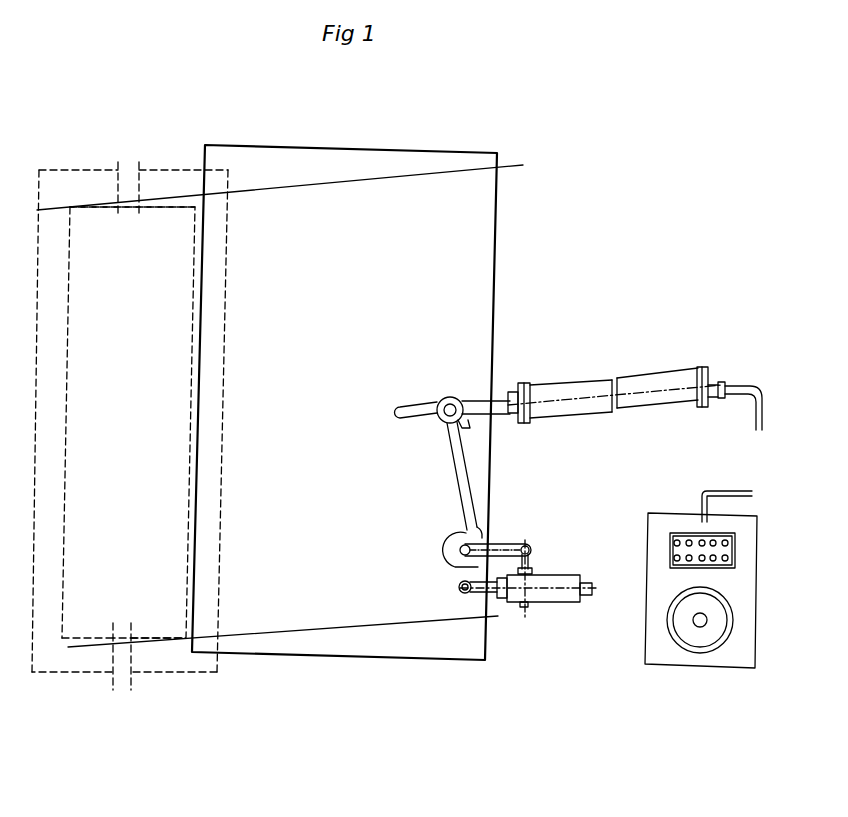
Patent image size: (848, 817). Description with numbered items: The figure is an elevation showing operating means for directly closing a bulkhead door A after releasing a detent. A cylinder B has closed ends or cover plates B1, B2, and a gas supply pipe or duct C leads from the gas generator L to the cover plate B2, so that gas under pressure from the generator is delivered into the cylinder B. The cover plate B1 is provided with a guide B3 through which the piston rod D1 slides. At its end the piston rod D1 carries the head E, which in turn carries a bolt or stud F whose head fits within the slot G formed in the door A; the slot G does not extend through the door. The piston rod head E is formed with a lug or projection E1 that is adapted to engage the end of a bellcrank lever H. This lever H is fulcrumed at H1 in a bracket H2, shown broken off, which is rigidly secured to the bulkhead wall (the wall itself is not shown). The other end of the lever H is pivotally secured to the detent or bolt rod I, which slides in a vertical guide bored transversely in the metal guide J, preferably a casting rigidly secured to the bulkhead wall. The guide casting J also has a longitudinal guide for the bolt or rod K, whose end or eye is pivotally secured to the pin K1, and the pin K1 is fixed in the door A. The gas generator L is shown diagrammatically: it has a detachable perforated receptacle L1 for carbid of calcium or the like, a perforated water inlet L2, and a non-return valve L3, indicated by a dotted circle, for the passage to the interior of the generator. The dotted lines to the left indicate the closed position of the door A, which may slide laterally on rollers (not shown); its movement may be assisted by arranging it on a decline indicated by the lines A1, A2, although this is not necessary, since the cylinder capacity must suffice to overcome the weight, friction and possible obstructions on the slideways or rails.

The bulkhead door A is at (485, 218).
The decline line A1 is at (225, 640).
The decline line A2 is at (212, 195).
The cylinder B is at (643, 385).
The cover plate B1 is at (520, 383).
The cover plate B2 is at (708, 368).
The guide B3 is at (513, 418).
The gas supply pipe C is at (756, 412).
The piston rod D1 is at (481, 400).
The head E is at (446, 397).
The lug E1 is at (464, 425).
The bolt or stud F is at (445, 412).
The slot G is at (398, 409).
The bellcrank lever H is at (454, 484).
The fulcrum H1 is at (457, 551).
The bracket H2 is at (484, 530).
The detent or bolt rod I is at (533, 562).
The guide casting J is at (560, 598).
The bolt or rod K is at (480, 594).
The pin K1 is at (458, 588).
The gas generator L is at (745, 597).
The perforated receptacle L1 is at (713, 632).
The water inlet L2 is at (722, 556).
The non-return valve L3 is at (712, 550).